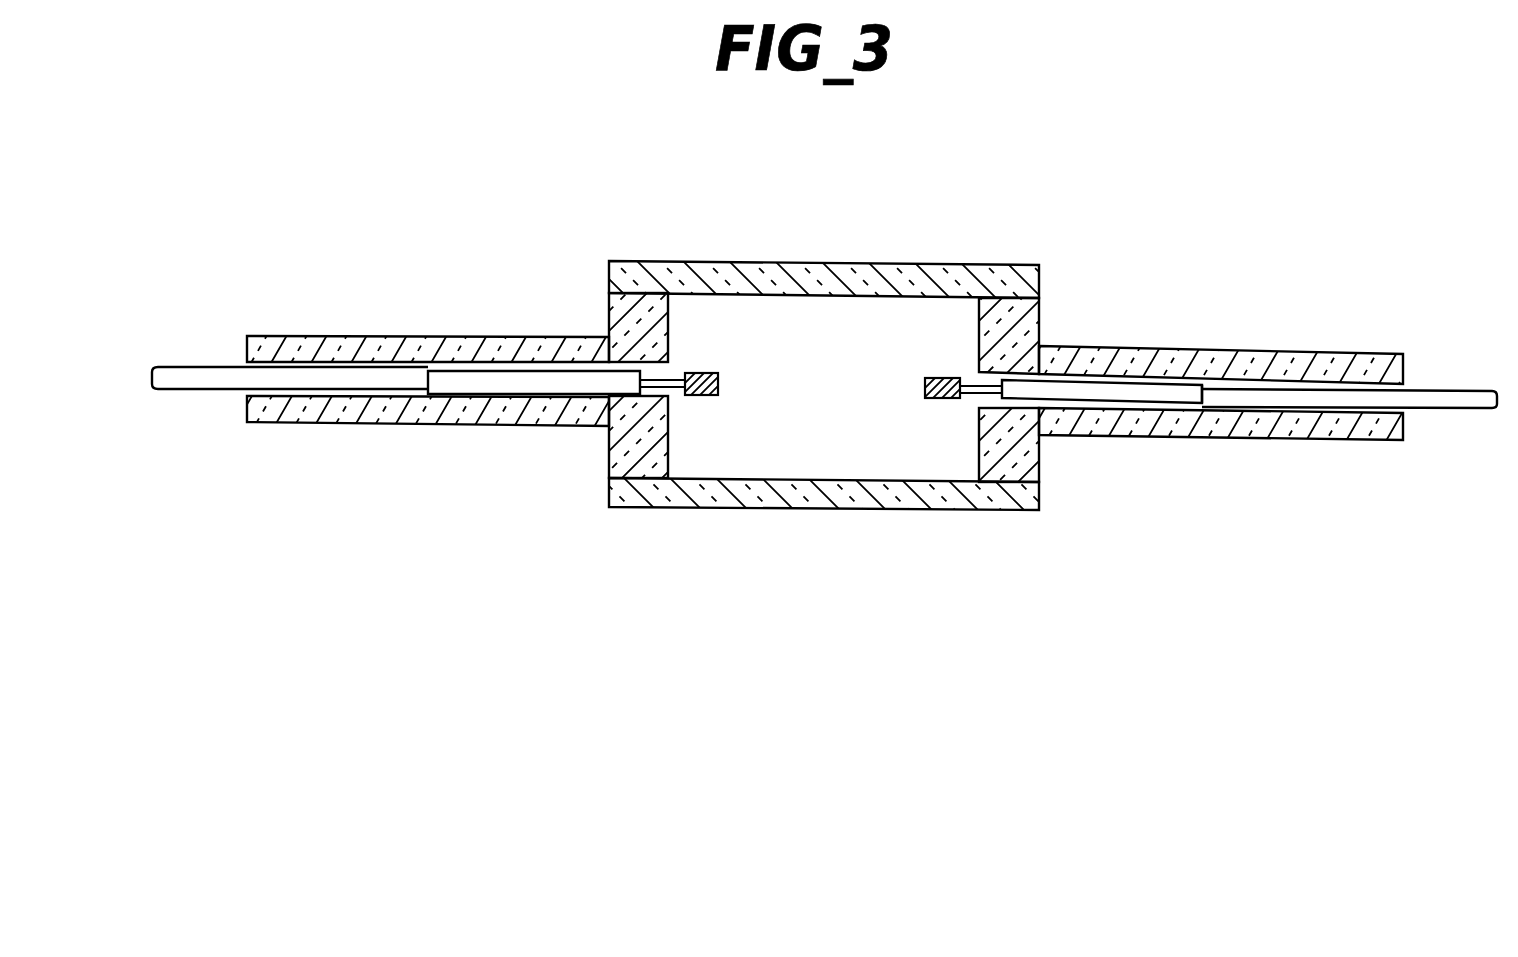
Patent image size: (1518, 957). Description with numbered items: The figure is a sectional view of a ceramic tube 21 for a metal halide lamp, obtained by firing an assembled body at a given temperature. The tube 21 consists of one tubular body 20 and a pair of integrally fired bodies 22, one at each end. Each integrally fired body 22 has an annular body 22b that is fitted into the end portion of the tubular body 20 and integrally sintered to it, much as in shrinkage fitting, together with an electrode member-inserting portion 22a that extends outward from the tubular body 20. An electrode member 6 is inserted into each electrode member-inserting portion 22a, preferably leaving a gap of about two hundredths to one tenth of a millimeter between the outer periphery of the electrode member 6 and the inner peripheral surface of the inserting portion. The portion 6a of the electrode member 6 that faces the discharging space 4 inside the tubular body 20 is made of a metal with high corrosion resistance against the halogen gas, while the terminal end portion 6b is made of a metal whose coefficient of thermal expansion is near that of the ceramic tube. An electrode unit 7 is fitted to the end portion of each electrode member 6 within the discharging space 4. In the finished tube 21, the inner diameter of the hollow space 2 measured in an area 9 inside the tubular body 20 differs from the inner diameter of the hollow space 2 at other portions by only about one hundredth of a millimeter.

The hollow space 2 is at (1212, 385).
The discharging space 4 is at (796, 293).
The electrode member 6 is at (1303, 371).
The portion of the electrode member facing the discharging space 6a is at (540, 380).
The terminal end portion 6b is at (292, 373).
The electrode unit 7 is at (718, 383).
The area inside the tubular body 9 is at (633, 507).
The tubular body 20 is at (908, 259).
The ceramic tube for a metal halide lamp 21 is at (1036, 252).
The integrally fired body 22 is at (406, 327).
The electrode member-inserting portion 22a is at (1140, 350).
The annular body 22b is at (1018, 462).